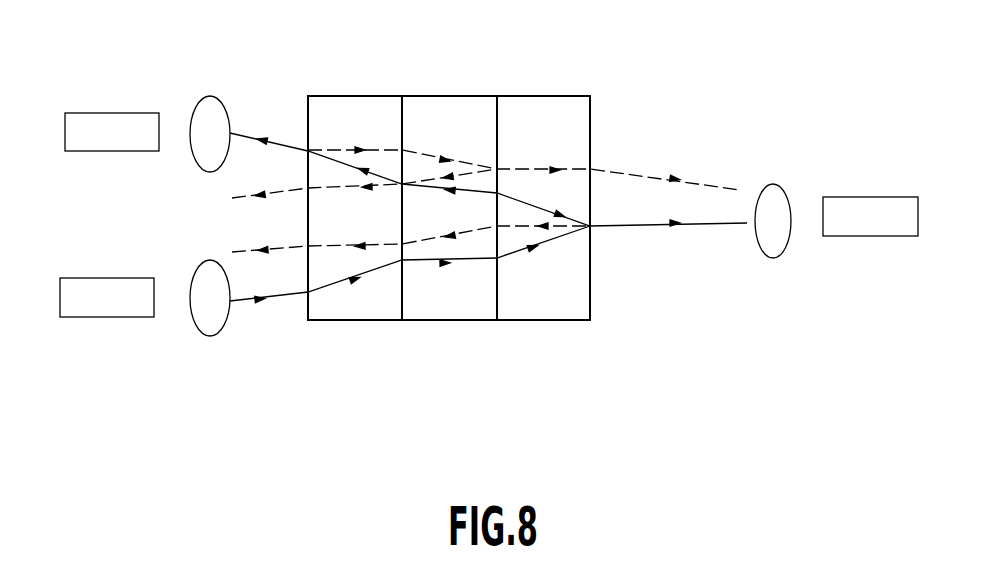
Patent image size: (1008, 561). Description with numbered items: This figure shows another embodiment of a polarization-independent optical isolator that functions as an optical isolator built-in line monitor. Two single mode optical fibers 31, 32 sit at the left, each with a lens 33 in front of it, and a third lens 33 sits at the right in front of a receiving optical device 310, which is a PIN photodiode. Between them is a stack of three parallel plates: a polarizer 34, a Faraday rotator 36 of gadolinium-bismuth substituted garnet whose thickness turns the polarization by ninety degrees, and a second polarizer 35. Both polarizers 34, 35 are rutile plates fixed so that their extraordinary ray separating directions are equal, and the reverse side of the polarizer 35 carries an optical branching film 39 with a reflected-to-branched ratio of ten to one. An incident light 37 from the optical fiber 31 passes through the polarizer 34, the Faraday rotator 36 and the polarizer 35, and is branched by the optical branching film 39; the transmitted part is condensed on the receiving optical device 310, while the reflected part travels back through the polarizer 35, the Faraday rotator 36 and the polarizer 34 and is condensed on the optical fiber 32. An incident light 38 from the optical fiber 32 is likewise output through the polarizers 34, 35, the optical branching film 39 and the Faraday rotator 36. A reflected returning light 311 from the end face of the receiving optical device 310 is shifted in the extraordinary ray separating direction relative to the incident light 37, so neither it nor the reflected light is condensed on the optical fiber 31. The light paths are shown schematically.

The optical fiber 31 is at (110, 318).
The optical fiber 32 is at (90, 113).
The lens 33 is at (210, 97).
The polarizer 34 is at (360, 96).
The polarizer 35 is at (505, 96).
The Faraday rotator 36 is at (445, 96).
The incident light 37 is at (353, 270).
The incident light 38 is at (572, 168).
The optical branching film 39 is at (592, 297).
The receiving optical device 310 is at (862, 200).
The reflected returning light 311 is at (323, 246).